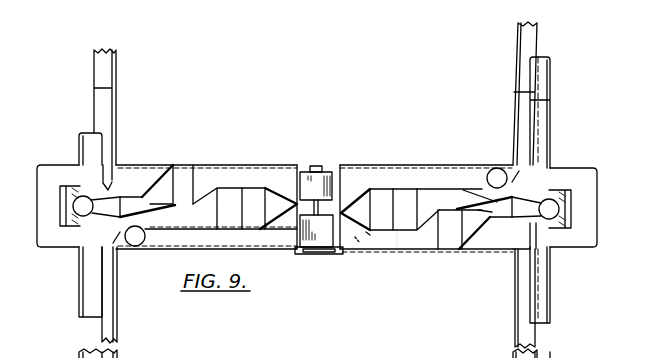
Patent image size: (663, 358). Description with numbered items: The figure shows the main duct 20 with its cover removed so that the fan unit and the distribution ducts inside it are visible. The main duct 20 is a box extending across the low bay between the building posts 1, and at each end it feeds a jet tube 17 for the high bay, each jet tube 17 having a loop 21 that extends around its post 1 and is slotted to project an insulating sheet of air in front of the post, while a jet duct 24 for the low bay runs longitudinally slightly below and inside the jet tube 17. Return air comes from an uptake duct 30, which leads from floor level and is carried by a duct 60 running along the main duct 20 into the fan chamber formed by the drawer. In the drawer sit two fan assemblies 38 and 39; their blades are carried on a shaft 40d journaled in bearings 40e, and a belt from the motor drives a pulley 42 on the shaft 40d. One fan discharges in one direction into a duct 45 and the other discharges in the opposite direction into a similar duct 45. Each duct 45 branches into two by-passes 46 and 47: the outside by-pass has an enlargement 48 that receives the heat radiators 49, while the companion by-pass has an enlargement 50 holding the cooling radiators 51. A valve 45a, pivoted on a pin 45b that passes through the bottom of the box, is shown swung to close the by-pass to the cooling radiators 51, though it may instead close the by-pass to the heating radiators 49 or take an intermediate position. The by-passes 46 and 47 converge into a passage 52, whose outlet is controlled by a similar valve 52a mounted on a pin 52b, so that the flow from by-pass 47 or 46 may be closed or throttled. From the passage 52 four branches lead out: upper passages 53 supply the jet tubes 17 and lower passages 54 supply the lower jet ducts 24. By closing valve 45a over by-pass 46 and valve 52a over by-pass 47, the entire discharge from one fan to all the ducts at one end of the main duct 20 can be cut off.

The post 1 is at (68, 205).
The jet tube 17 is at (83, 142).
The main duct 20 is at (217, 165).
The loop 21 is at (37, 243).
The jet duct 24 is at (113, 113).
The uptake duct 30 is at (80, 222).
The fan assembly 38 is at (302, 231).
The fan assembly 39 is at (332, 187).
The shaft 40d is at (320, 208).
The bearings 40e is at (318, 172).
The pulley 42 is at (313, 254).
The duct 45 is at (287, 185).
The valve 45a is at (346, 251).
The pin 45b is at (366, 232).
The by-pass 46 is at (397, 243).
The by-pass 47 is at (393, 192).
The enlargement 48 is at (202, 174).
The heat radiators 49 is at (177, 176).
The enlargement 50 is at (365, 190).
The cooling radiators 51 is at (244, 217).
The passage 52 is at (497, 216).
The valve 52a is at (478, 204).
The pin 52b is at (490, 212).
The upper passage 53 is at (109, 187).
The lower passage 54 is at (114, 243).
The duct 60 is at (189, 245).